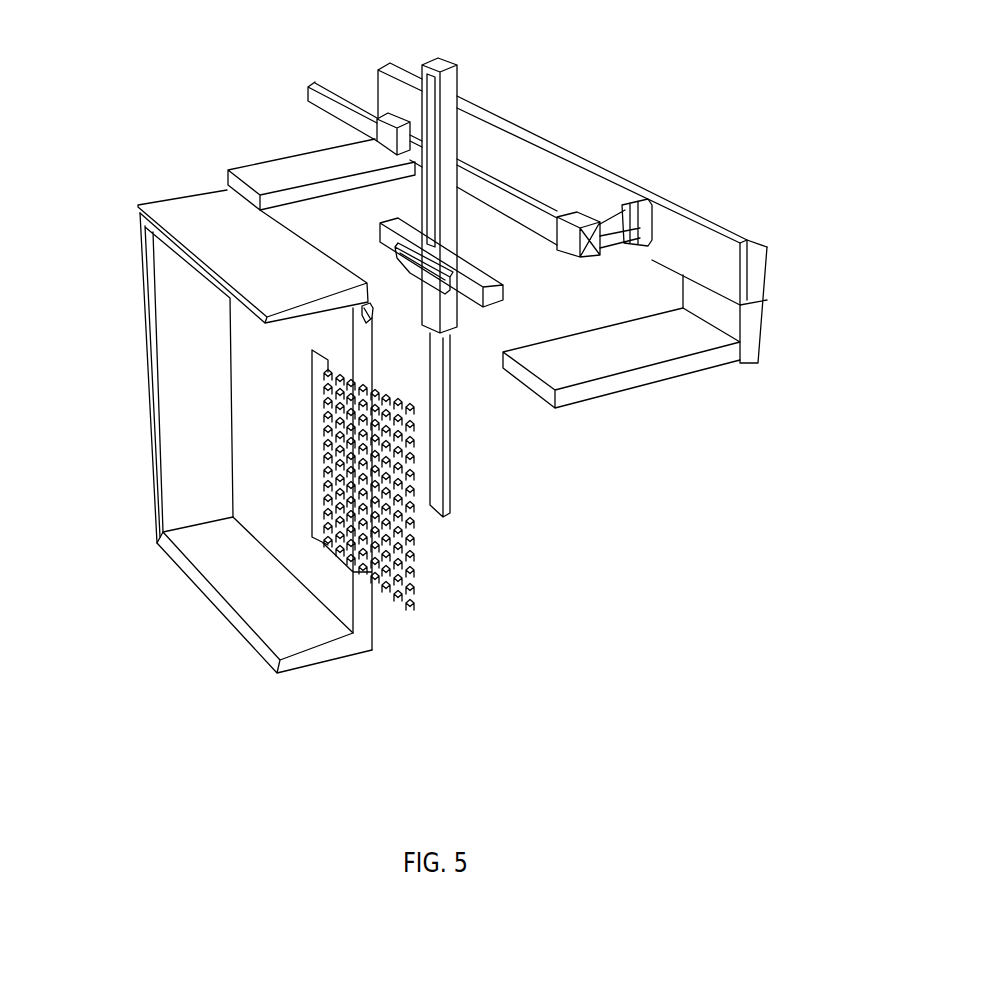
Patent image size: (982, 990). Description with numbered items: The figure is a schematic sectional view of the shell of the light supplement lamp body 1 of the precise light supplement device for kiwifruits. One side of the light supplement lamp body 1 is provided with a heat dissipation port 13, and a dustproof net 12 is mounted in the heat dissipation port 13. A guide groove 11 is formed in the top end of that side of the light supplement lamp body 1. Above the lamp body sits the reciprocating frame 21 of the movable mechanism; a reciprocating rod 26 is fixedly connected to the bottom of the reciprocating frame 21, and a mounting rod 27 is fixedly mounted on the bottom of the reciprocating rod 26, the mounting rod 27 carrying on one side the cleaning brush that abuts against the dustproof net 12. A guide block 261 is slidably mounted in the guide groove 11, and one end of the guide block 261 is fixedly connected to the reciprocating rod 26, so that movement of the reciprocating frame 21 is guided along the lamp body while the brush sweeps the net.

The light supplement lamp body 1 is at (202, 350).
The guide groove 11 is at (368, 315).
The dustproof net 12 is at (330, 538).
The heat dissipation port 13 is at (317, 417).
The reciprocating frame 21 is at (463, 76).
The reciprocating rod 26 is at (503, 300).
The guide block 261 is at (435, 265).
The mounting rod 27 is at (453, 372).